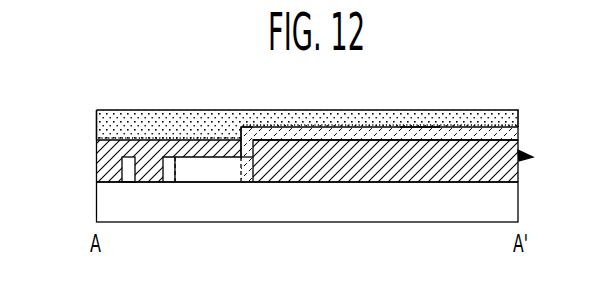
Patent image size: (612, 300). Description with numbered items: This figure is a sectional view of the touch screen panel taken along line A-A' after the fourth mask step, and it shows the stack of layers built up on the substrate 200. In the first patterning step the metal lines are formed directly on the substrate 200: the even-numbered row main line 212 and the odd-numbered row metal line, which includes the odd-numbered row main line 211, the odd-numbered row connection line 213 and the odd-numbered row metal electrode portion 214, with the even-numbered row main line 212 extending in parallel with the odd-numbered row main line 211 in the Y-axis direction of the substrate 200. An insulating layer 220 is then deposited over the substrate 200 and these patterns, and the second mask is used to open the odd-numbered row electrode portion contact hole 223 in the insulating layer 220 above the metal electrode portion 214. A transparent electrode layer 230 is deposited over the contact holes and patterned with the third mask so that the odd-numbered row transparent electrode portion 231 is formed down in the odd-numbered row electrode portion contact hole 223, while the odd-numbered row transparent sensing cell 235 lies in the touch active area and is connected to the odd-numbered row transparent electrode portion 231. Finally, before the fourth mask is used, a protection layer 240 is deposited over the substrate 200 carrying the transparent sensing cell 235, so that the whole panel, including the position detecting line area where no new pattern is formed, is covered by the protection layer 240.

The substrate 200 is at (518, 193).
The odd-numbered row main line 211 is at (168, 172).
The even-numbered row main line 212 is at (128, 170).
The odd-numbered row connection line 213 is at (222, 173).
The odd-numbered row metal electrode portion 214 is at (248, 175).
The insulating layer 220 is at (518, 172).
The odd-numbered row electrode portion contact hole 223 is at (243, 140).
The transparent electrode layer 230 is at (518, 133).
The odd-numbered row transparent electrode portion 231 is at (246, 125).
The odd-numbered row transparent sensing cell 235 is at (419, 126).
The protection layer 240 is at (518, 114).